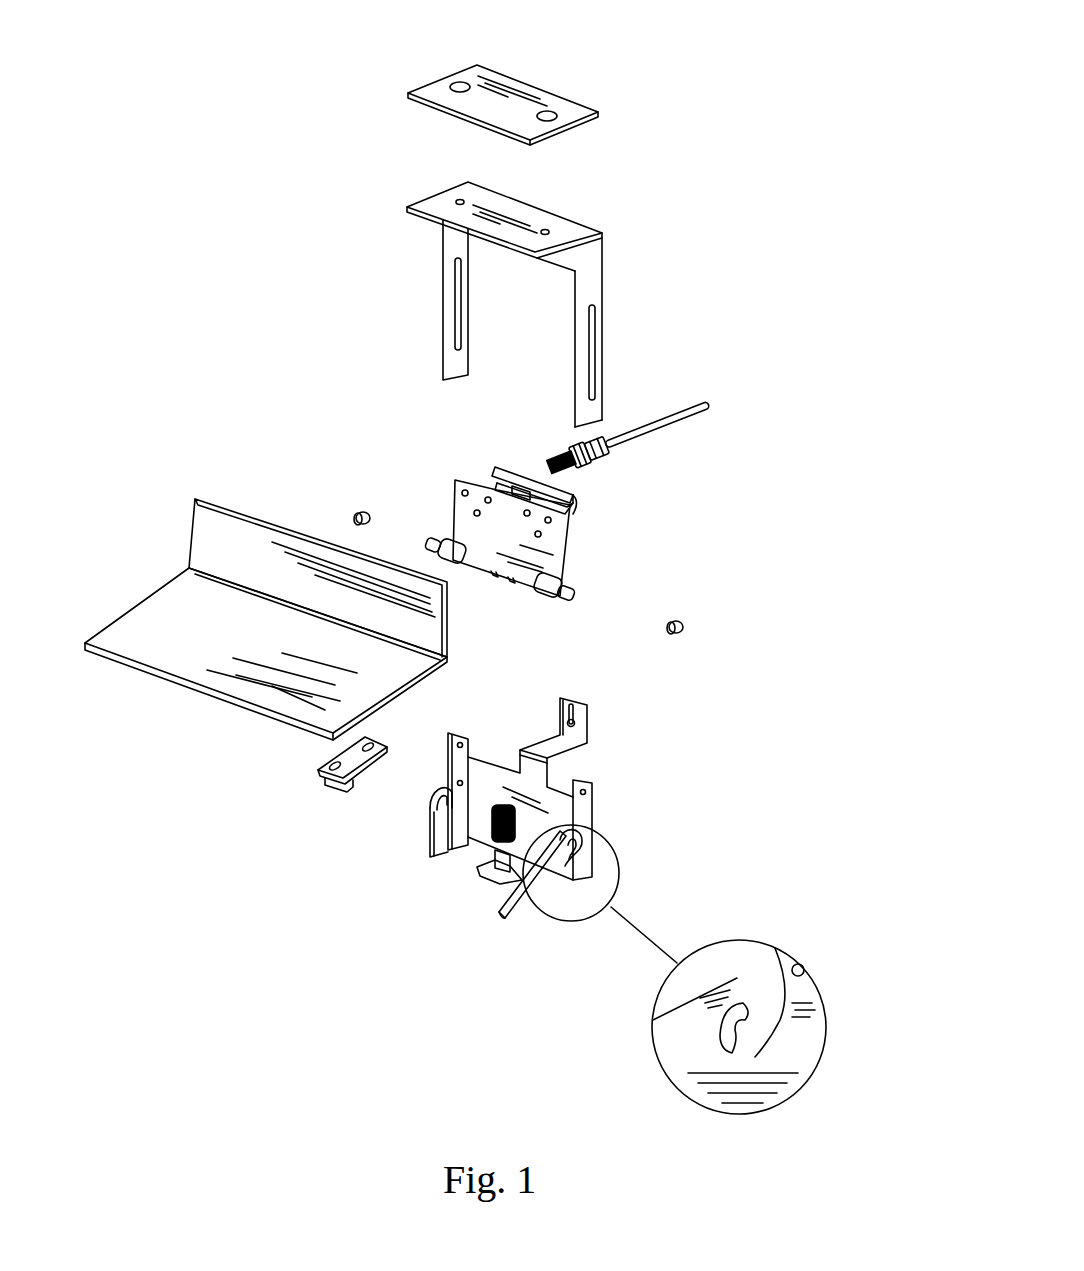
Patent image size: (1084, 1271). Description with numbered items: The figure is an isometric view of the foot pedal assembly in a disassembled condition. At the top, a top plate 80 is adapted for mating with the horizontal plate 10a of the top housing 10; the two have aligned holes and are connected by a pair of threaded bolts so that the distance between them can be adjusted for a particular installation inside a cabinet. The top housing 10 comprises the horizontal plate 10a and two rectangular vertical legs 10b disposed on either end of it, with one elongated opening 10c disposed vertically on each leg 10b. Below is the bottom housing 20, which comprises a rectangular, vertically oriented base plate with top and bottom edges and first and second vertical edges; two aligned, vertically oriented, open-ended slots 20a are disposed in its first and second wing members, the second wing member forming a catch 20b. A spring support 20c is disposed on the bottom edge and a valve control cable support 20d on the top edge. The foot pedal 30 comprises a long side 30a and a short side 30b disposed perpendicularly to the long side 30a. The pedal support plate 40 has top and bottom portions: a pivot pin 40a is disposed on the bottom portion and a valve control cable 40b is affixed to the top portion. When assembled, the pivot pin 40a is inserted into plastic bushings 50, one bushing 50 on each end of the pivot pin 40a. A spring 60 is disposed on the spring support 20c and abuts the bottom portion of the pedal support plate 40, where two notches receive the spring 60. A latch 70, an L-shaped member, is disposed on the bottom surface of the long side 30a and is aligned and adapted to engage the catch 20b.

The top housing 10 is at (513, 295).
The horizontal plate 10a is at (542, 218).
The vertical leg 10b is at (457, 370).
The elongated opening 10c is at (457, 327).
The bottom housing 20 is at (634, 870).
The slot 20a is at (432, 822).
The catch 20b is at (520, 905).
The spring support 20c is at (478, 864).
The valve control cable support 20d is at (588, 724).
The foot pedal 30 is at (257, 602).
The long side 30a is at (190, 662).
The short side 30b is at (205, 517).
The pedal support plate 40 is at (542, 497).
The pivot pin 40a is at (437, 537).
The valve control cable 40b is at (538, 470).
The bushing 50 is at (364, 510).
The spring 60 is at (496, 802).
The latch 70 is at (323, 777).
The top plate 80 is at (528, 92).